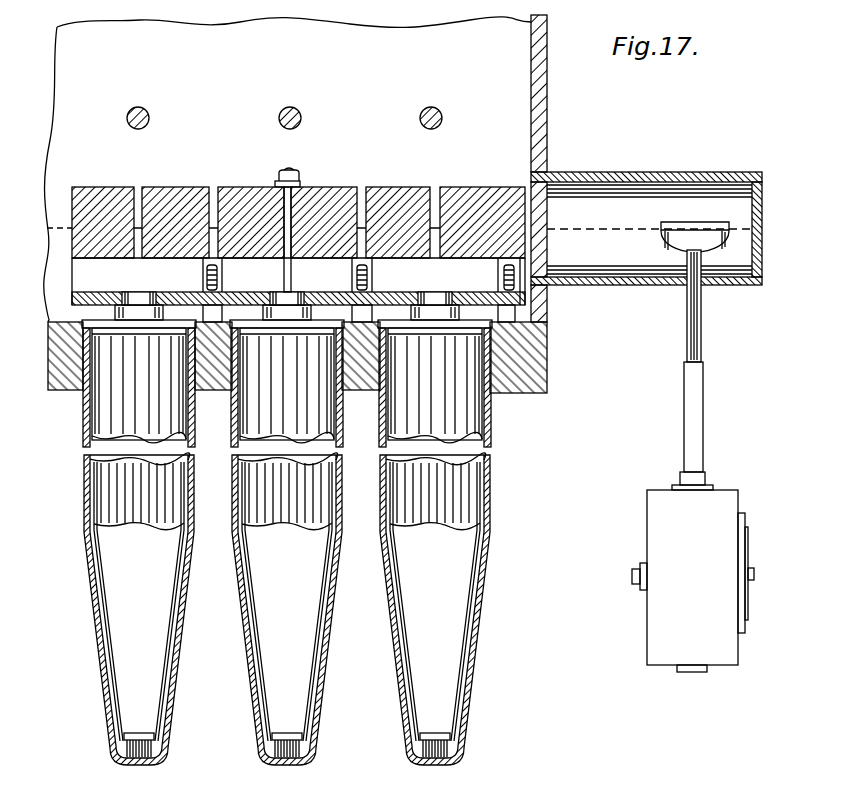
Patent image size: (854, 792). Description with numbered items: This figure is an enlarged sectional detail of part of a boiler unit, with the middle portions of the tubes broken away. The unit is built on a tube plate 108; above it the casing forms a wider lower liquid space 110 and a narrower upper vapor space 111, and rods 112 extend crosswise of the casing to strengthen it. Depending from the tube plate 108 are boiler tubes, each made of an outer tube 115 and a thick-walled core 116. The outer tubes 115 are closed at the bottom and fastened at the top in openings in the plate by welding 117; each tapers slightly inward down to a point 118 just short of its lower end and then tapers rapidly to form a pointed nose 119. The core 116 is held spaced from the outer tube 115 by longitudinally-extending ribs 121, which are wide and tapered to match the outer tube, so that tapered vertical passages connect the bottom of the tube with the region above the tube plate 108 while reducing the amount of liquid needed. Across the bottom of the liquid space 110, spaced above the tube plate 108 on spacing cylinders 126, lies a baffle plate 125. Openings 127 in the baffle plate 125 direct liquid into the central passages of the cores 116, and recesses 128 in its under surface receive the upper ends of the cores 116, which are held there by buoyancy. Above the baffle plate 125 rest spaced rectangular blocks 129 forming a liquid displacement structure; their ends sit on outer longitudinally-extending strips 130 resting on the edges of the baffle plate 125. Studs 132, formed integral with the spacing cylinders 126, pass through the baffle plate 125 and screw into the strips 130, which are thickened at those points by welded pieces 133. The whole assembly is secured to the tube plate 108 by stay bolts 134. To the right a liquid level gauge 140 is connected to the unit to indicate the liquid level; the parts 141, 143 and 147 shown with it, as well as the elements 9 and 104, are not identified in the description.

The wall 9 is at (549, 40).
The base 104 is at (548, 407).
The tube plate 108 is at (548, 380).
The liquid space 110 is at (298, 281).
The vapor space 111 is at (287, 169).
The rods 112 is at (147, 113).
The outer tube 115 is at (87, 423).
The core 116 is at (128, 398).
The welding 117 is at (82, 322).
The point 118 is at (236, 533).
The pointed nose 119 is at (255, 714).
The longitudinally-extending ribs 121 is at (185, 492).
The baffle plate 125 is at (523, 301).
The spacing cylinders 126 is at (517, 317).
The openings 127 is at (278, 292).
The recesses 128 is at (114, 293).
The rectangular blocks 129 is at (458, 187).
The outer longitudinally-extending strips 130 is at (530, 268).
The studs 132 is at (548, 268).
The pieces 133 is at (206, 276).
The stay bolts 134 is at (296, 172).
The liquid level gauge 140 is at (712, 172).
The float dish 141 is at (718, 236).
The rod 143 is at (708, 340).
The stem 147 is at (700, 265).